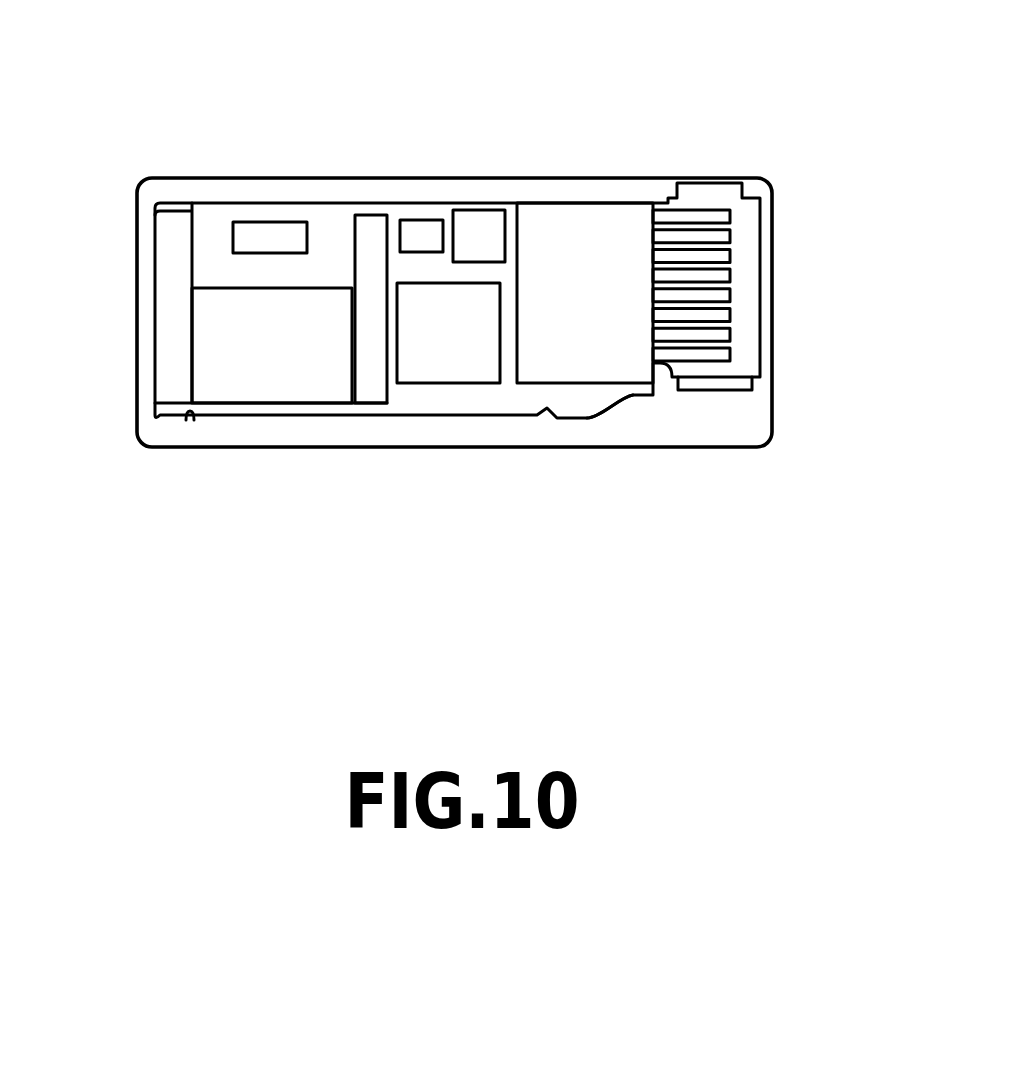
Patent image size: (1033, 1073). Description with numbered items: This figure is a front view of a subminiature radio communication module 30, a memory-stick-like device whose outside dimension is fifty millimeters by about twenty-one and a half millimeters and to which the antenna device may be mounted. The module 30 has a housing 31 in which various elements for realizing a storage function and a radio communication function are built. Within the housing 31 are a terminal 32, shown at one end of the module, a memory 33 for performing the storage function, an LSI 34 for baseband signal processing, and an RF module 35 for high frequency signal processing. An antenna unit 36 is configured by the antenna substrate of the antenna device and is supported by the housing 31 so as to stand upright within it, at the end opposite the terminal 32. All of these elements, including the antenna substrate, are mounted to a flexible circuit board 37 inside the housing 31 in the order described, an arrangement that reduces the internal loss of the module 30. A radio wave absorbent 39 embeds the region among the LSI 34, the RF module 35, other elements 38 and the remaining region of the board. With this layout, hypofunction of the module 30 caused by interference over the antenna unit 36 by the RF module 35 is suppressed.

The subminiature radio communication module 30 is at (712, 53).
The housing 31 is at (774, 243).
The terminal 32 is at (718, 316).
The memory 33 is at (583, 362).
The LSI 34 is at (470, 370).
The RF module 35 is at (270, 385).
The antenna unit 36 is at (157, 362).
The flexible circuit board 37 is at (630, 397).
The other elements 38 is at (278, 238).
The radio wave absorbent 39 is at (475, 222).